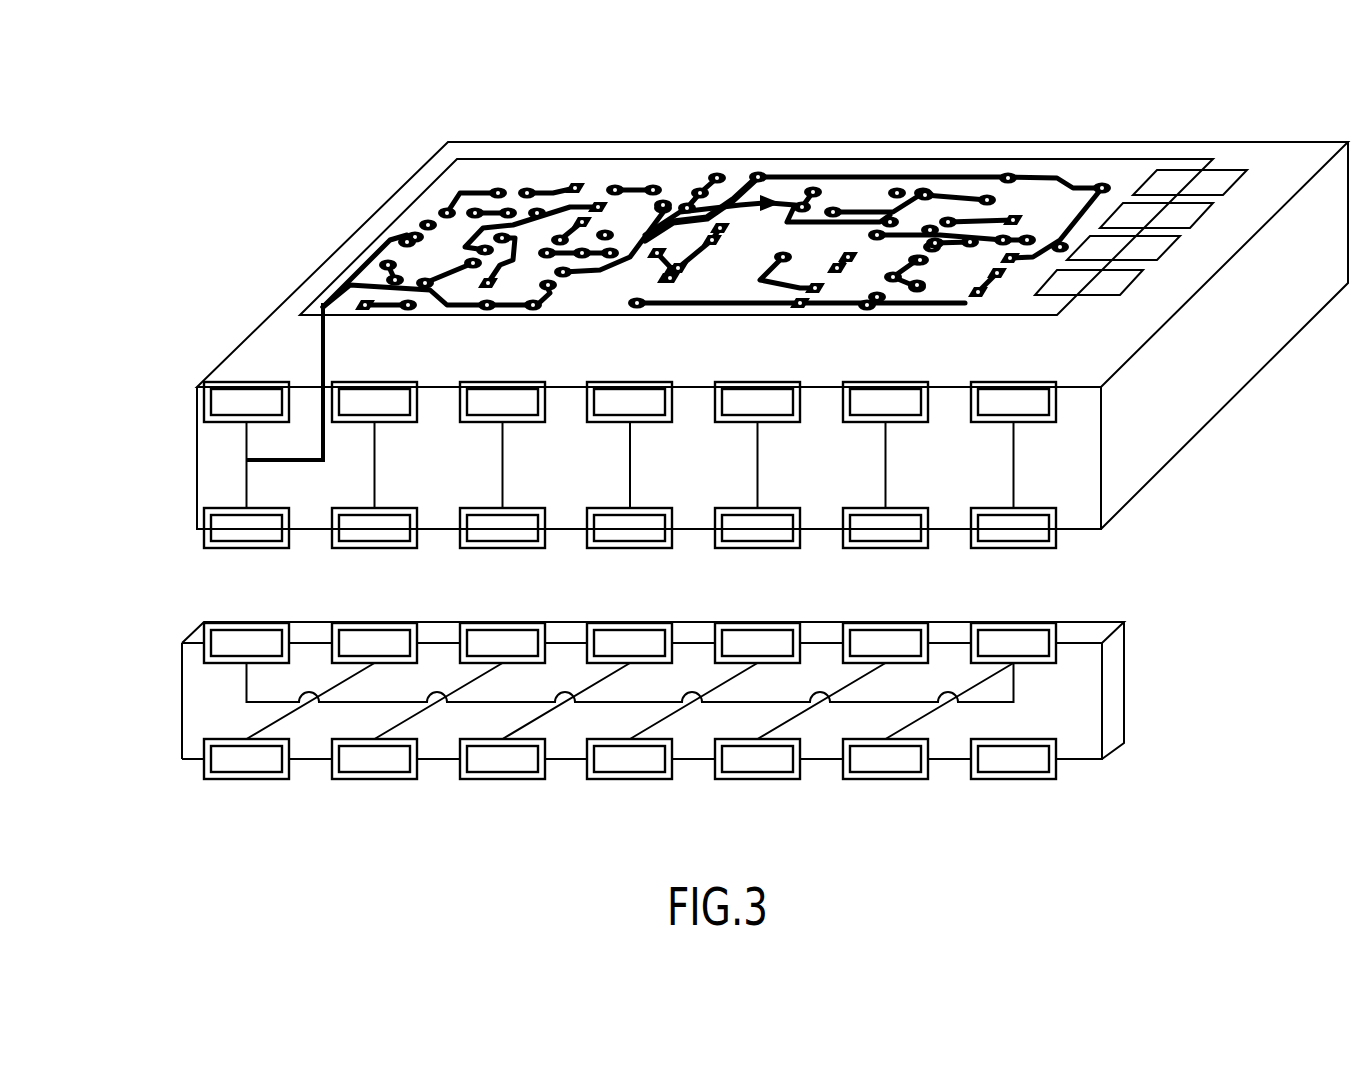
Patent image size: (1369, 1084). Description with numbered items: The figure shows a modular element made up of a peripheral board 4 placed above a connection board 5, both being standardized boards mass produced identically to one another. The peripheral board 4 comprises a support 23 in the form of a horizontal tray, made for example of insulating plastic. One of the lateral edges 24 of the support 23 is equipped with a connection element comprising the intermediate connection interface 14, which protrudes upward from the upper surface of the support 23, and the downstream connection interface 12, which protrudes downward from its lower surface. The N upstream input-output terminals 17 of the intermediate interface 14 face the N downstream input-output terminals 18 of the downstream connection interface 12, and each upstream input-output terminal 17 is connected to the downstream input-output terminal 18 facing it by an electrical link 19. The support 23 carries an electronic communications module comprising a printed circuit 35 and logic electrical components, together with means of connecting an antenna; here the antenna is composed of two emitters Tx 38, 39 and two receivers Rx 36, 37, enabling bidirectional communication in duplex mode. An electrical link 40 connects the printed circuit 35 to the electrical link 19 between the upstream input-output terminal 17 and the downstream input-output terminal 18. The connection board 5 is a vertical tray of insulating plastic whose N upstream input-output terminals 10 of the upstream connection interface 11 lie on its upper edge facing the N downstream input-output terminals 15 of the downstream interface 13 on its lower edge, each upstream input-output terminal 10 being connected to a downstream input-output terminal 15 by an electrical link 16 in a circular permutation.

The peripheral board 4 is at (168, 442).
The connection board 5 is at (135, 681).
The upstream input-output terminals 10 is at (204, 630).
The upstream connection interface 11 is at (175, 622).
The downstream connection interface 12 is at (188, 507).
The downstream interface 13 is at (172, 737).
The intermediate connection interface 14 is at (188, 381).
The downstream input-output terminals 15 is at (252, 781).
The electrical link 16 is at (283, 718).
The upstream input-output terminals 17 is at (230, 387).
The downstream input-output terminals 18 is at (252, 550).
The electrical link 19 is at (247, 477).
The support 23 is at (1242, 330).
The lateral edge 24 is at (1080, 460).
The printed circuit 35 is at (975, 160).
The receiver Rx 36 is at (1118, 284).
The receiver Rx 37 is at (1163, 250).
The emitter Tx 38 is at (1126, 218).
The emitter Tx 39 is at (1225, 183).
The electrical link 40 is at (318, 360).